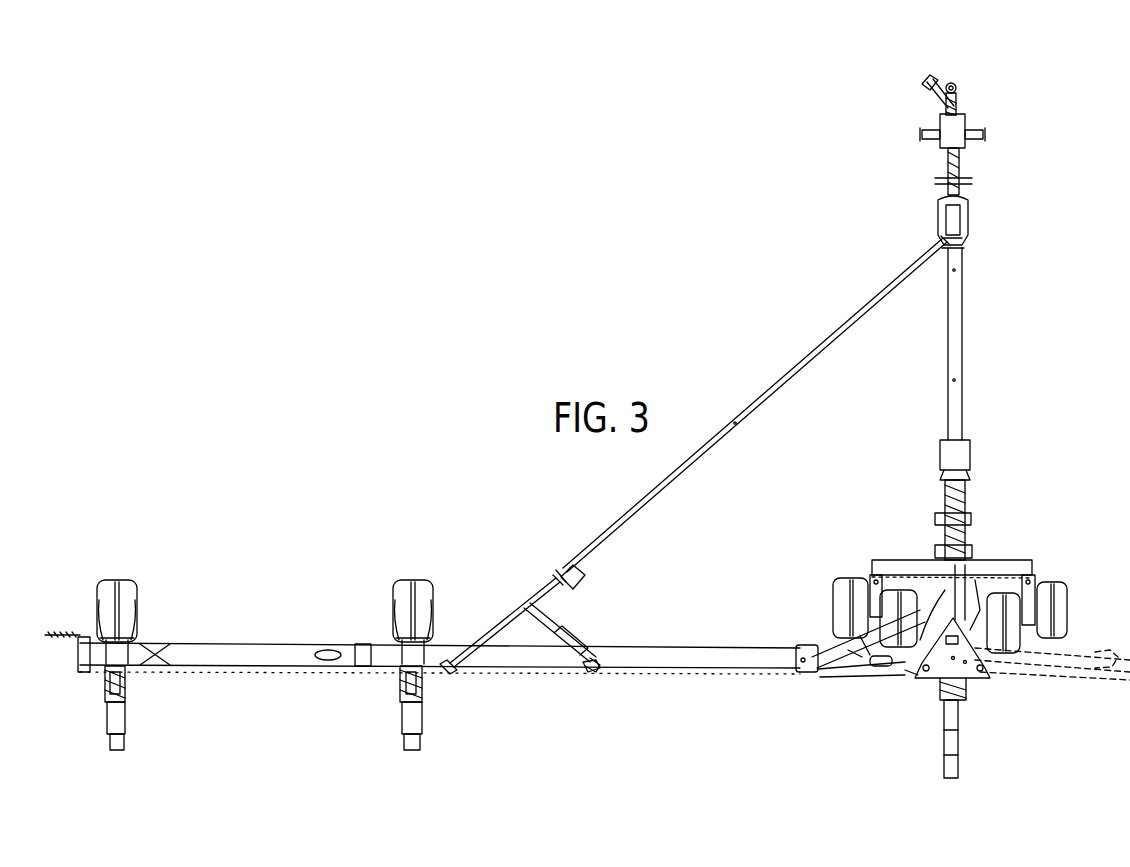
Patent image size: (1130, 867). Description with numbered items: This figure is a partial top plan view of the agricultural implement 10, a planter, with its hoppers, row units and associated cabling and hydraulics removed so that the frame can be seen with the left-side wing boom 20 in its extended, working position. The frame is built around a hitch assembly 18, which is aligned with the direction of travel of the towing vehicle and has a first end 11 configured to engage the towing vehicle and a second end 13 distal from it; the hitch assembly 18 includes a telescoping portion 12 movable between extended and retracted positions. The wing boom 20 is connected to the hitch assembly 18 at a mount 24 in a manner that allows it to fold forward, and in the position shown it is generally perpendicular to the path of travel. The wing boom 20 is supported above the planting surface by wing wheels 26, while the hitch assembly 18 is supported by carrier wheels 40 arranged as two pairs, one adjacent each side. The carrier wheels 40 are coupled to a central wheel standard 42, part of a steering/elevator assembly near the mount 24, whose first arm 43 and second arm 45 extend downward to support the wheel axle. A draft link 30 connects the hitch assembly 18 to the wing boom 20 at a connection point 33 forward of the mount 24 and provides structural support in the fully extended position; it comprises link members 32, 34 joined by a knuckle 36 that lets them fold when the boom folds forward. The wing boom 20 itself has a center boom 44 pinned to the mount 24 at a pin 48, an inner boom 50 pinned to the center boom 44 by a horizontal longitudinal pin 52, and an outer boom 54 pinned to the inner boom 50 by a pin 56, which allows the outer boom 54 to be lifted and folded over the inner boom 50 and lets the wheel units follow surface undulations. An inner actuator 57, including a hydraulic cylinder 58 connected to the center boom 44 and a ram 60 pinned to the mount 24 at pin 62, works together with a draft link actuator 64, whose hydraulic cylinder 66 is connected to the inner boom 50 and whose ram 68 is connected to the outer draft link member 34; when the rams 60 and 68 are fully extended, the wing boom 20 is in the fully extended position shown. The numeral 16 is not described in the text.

The agricultural implement 10 is at (283, 487).
The first end 11 is at (950, 72).
The telescoping portion 12 is at (960, 303).
The second end 13 is at (935, 768).
The hitch frame 16 is at (942, 636).
The hitch assembly 18 is at (985, 368).
The wing boom 20 is at (422, 666).
The mount 24 is at (933, 685).
The wing wheels 26 is at (128, 585).
The draft link 30 is at (694, 455).
The link member 32 is at (806, 352).
The connection point 33 is at (968, 242).
The outer draft link member 34 is at (502, 617).
The knuckle 36 is at (586, 574).
The carrier wheels 40 is at (857, 640).
The central wheel standard 42 is at (945, 564).
The first arm 43 is at (868, 580).
The center boom 44 is at (882, 668).
The second arm 45 is at (1045, 580).
The pin 48 is at (958, 680).
The inner boom 50 is at (712, 660).
The horizontal longitudinal pin 52 is at (806, 642).
The outer boom 54 is at (225, 652).
The pin 56 is at (358, 668).
The inner actuator 57 is at (832, 634).
The hydraulic cylinder 58 is at (848, 667).
The ram 60 is at (905, 600).
The pin 62 is at (962, 600).
The draft link actuator 64 is at (535, 638).
The hydraulic cylinder 66 is at (568, 665).
The ram 68 is at (556, 630).